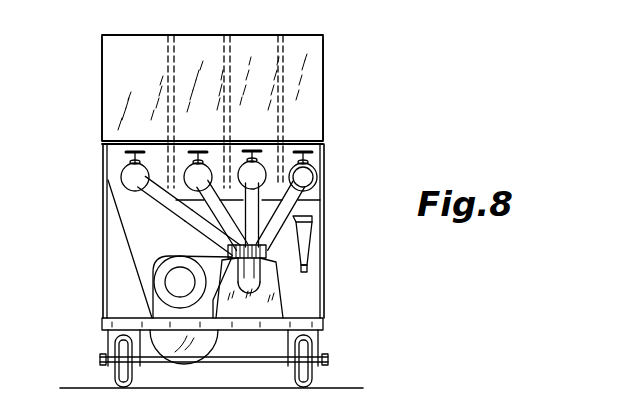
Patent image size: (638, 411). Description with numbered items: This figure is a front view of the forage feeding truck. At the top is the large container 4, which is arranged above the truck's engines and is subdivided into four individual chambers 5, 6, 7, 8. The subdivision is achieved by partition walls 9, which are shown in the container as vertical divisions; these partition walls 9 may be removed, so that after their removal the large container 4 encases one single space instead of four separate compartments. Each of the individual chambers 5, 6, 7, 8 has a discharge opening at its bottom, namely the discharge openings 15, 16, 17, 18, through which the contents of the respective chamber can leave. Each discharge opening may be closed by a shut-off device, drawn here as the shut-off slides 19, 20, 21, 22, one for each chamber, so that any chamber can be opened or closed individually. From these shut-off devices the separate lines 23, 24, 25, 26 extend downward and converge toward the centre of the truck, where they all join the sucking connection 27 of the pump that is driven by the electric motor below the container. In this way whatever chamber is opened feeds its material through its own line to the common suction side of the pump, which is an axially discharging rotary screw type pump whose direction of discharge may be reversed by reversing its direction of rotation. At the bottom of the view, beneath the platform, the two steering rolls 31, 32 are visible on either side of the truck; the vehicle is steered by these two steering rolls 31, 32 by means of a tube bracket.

The large container 4 is at (210, 35).
The individual chamber 5 is at (313, 78).
The individual chamber 6 is at (250, 45).
The individual chamber 7 is at (184, 43).
The individual chamber 8 is at (110, 73).
The partition walls 9 is at (168, 82).
The discharge opening 15 is at (320, 182).
The discharge opening 16 is at (238, 150).
The discharge opening 17 is at (180, 150).
The discharge opening 18 is at (118, 177).
The shut-off slide 19 is at (303, 166).
The shut-off slide 20 is at (305, 200).
The shut-off slide 21 is at (170, 212).
The shut-off slide 22 is at (125, 193).
The separate line 23 is at (295, 222).
The separate line 24 is at (273, 164).
The separate line 25 is at (244, 238).
The separate line 26 is at (145, 195).
The sucking connection 27 is at (263, 255).
The steering roll 31 is at (312, 377).
The steering roll 32 is at (112, 374).